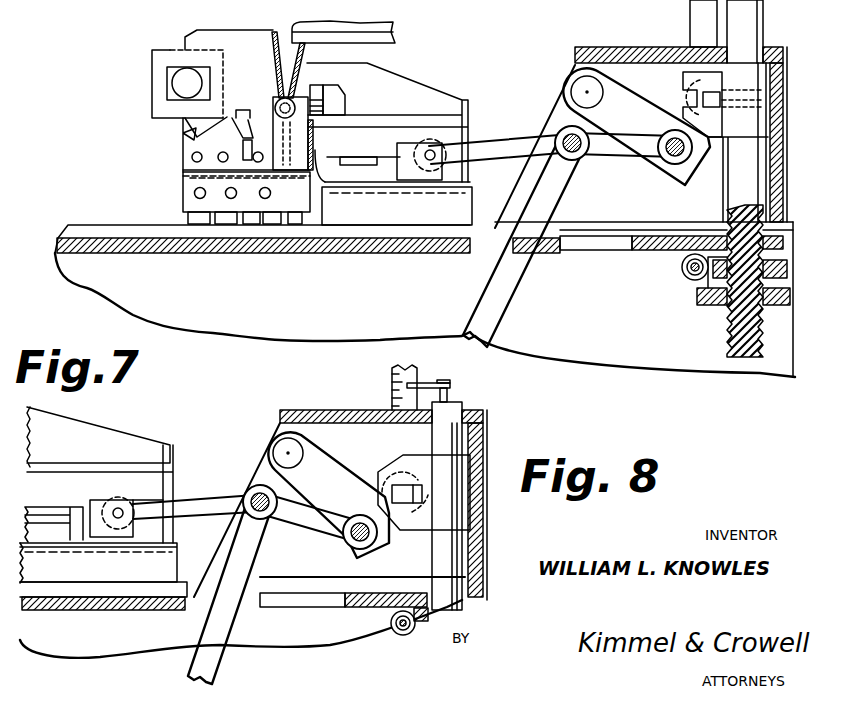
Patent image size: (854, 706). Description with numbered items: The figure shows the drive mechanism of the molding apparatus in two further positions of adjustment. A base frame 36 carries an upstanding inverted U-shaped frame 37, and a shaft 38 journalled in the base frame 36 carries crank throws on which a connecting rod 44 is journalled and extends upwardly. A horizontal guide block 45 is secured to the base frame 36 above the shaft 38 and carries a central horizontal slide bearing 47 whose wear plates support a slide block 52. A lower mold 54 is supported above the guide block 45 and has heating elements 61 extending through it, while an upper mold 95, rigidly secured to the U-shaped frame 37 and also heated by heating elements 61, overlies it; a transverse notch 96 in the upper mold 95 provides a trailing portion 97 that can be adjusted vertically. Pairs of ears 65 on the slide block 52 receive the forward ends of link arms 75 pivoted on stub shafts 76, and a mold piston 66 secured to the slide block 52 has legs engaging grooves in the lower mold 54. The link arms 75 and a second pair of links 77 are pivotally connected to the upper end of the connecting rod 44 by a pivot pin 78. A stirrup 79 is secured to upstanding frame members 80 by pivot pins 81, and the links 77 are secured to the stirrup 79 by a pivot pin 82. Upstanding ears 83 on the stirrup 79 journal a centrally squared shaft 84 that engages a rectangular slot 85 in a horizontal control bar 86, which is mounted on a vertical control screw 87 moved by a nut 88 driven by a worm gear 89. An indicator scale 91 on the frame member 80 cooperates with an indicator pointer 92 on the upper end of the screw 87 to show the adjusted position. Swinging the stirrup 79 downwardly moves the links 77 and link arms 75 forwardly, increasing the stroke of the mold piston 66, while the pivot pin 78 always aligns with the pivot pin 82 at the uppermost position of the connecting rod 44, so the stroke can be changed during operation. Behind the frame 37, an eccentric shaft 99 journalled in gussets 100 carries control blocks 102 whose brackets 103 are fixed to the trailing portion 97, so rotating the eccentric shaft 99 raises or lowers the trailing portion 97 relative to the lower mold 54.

In FIG. 7, the base frame 36 is at (168, 244).
In FIG. 8, the base frame 36 is at (147, 607).
In FIG. 7, the inverted U-shaped frame 37 is at (253, 42).
In FIG. 7, the shaft 38 is at (400, 6).
In FIG. 7, the connecting rod 44 is at (522, 268).
In FIG. 8, the connecting rod 44 is at (233, 631).
In FIG. 7, the guide block 45 is at (227, 228).
In FIG. 8, the guide block 45 is at (38, 588).
In FIG. 7, the central horizontal slide bearing 47 is at (388, 217).
In FIG. 8, the central horizontal slide bearing 47 is at (107, 572).
In FIG. 8, the slide block 52 is at (60, 542).
In FIG. 7, the lower mold 54 is at (190, 208).
In FIG. 7, the heating elements 61 is at (192, 156).
In FIG. 8, the ears 65 is at (78, 503).
In FIG. 7, the mold piston 66 is at (370, 165).
In FIG. 8, the mold piston 66 is at (67, 489).
In FIG. 7, the link arm 75 is at (500, 148).
In FIG. 8, the link arm 75 is at (195, 510).
In FIG. 7, the stub shaft 76 is at (434, 150).
In FIG. 8, the stub shaft 76 is at (122, 510).
In FIG. 7, the link 77 is at (621, 147).
In FIG. 8, the link 77 is at (310, 518).
In FIG. 7, the pivot pin 78 is at (578, 163).
In FIG. 8, the pivot pin 78 is at (257, 490).
In FIG. 7, the stirrup 79 is at (617, 103).
In FIG. 8, the stirrup 79 is at (320, 470).
In FIG. 7, the upstanding frame member 80 is at (617, 72).
In FIG. 8, the upstanding frame member 80 is at (360, 413).
In FIG. 7, the pivot pin 81 is at (583, 85).
In FIG. 8, the pivot pin 81 is at (280, 445).
In FIG. 7, the pivot pin 82 is at (676, 165).
In FIG. 8, the pivot pin 82 is at (357, 544).
In FIG. 7, the ears 83 is at (672, 108).
In FIG. 8, the ears 83 is at (375, 488).
In FIG. 7, the centrally squared shaft 84 is at (715, 92).
In FIG. 8, the centrally squared shaft 84 is at (415, 484).
In FIG. 7, the slot 85 is at (708, 118).
In FIG. 7, the control bar 86 is at (779, 46).
In FIG. 8, the control bar 86 is at (475, 470).
In FIG. 7, the control screw 87 is at (748, 167).
In FIG. 8, the control screw 87 is at (456, 549).
In FIG. 7, the nut 88 is at (697, 298).
In FIG. 8, the nut 88 is at (427, 623).
In FIG. 7, the worm gear 89 is at (683, 273).
In FIG. 8, the worm gear 89 is at (388, 622).
In FIG. 8, the indicator scale 91 is at (416, 376).
In FIG. 8, the indicator pointer 92 is at (440, 380).
In FIG. 7, the upper mold 95 is at (255, 140).
In FIG. 7, the notch 96 is at (244, 136).
In FIG. 7, the trailing portion 97 is at (185, 140).
In FIG. 7, the eccentric shaft 99 is at (180, 70).
In FIG. 7, the gusset 100 is at (192, 34).
In FIG. 7, the control block 102 is at (162, 98).
In FIG. 7, the bracket 103 is at (185, 118).